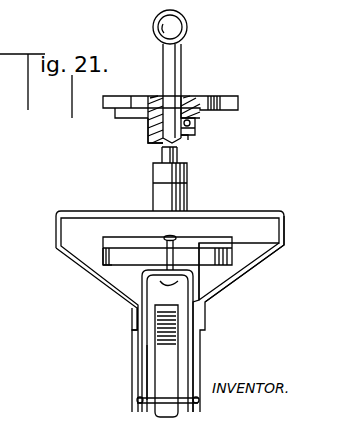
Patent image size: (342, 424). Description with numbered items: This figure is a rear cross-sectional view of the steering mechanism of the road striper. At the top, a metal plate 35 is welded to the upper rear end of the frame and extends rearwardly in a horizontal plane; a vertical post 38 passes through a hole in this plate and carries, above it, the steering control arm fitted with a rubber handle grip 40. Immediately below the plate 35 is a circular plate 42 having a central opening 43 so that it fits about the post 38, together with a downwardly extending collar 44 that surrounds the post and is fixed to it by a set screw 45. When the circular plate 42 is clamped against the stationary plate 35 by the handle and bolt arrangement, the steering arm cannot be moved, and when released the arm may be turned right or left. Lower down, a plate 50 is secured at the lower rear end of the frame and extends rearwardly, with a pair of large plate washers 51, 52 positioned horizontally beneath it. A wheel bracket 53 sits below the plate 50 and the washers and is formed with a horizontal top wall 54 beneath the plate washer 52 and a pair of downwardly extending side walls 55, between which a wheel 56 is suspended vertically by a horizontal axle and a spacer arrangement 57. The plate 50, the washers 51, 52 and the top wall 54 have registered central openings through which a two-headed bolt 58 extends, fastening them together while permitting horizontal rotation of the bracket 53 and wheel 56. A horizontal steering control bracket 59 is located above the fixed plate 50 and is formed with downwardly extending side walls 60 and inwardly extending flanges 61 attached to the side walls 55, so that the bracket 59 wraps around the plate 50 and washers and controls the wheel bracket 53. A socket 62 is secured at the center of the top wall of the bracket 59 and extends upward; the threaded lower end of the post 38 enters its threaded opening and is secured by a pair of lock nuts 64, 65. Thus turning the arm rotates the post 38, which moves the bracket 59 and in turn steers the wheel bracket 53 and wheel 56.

The rubber handle grip 40 is at (153, 27).
The post 38 is at (165, 141).
The metal plate 35 is at (108, 108).
The circular plate 42 is at (118, 114).
The collar 44 is at (152, 130).
The central opening 43 is at (190, 129).
The set screw 45 is at (190, 137).
The socket 62 is at (155, 196).
The lock nut 65 is at (187, 168).
The lock nut 64 is at (190, 183).
The steering control bracket 59 is at (86, 209).
The side walls 60 is at (284, 238).
The inwardly extending flanges 61 is at (133, 325).
The plate 50 is at (94, 240).
The plate washer 51 is at (106, 248).
The plate washer 52 is at (113, 263).
The two-headed bolt 58 is at (176, 237).
The horizontal top wall 54 is at (167, 341).
The wheel 56 is at (178, 360).
The side walls 55 is at (194, 345).
The wheel bracket 53 is at (143, 348).
The spacer arrangement 57 is at (147, 395).